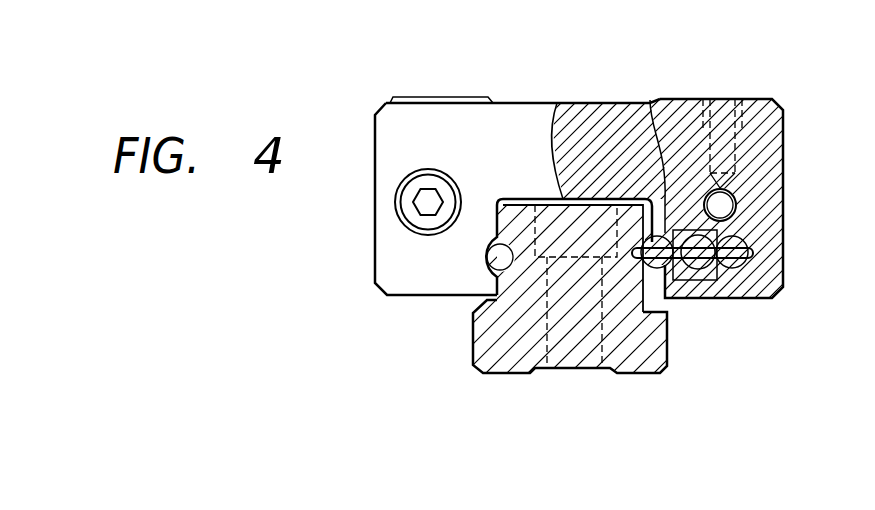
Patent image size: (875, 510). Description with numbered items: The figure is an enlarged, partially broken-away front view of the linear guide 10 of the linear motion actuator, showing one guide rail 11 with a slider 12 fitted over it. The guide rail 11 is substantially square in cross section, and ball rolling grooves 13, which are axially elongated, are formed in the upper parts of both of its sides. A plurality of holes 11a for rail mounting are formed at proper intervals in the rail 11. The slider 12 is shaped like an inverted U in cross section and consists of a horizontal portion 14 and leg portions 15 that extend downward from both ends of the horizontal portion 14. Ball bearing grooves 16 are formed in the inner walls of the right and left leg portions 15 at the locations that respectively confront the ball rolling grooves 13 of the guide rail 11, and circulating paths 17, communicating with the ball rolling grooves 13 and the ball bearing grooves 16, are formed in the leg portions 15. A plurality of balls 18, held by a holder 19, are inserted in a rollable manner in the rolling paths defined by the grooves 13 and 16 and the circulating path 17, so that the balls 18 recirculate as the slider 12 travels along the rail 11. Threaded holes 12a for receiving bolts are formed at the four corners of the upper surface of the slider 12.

The linear guide 10 is at (748, 84).
The guide rail 11 is at (487, 336).
The hole for rail mounting 11a is at (547, 335).
The slider 12 is at (785, 112).
The threaded hole 12a is at (717, 97).
The ball rolling groove 13 is at (633, 288).
The horizontal portion 14 is at (570, 120).
The leg portion 15 is at (773, 250).
The ball bearing groove 16 is at (658, 270).
The circulating path 17 is at (783, 290).
The ball 18 is at (648, 103).
The holder 19 is at (735, 232).